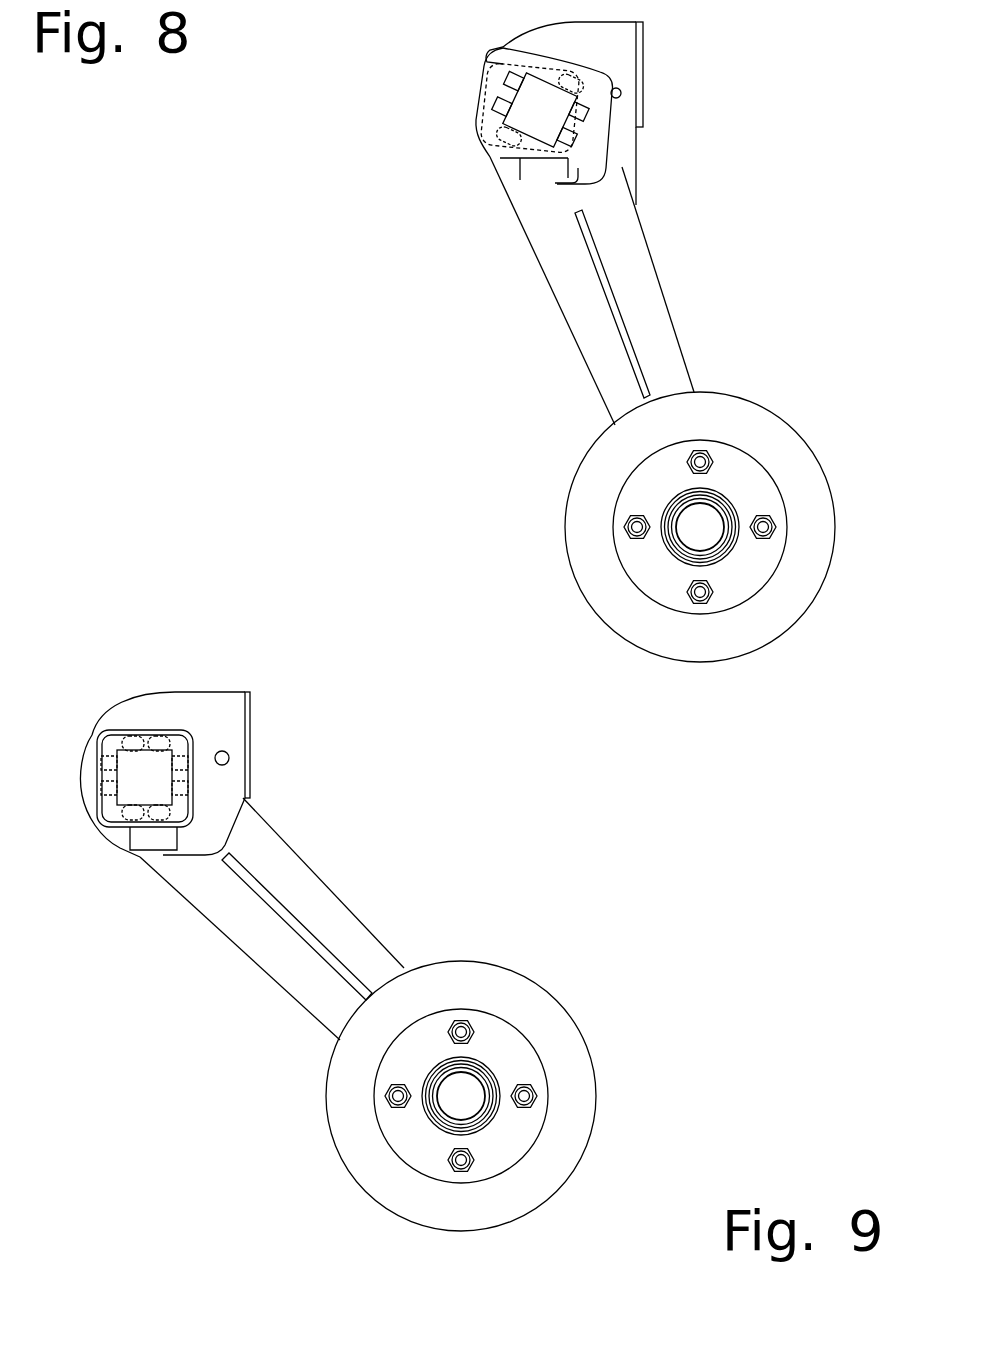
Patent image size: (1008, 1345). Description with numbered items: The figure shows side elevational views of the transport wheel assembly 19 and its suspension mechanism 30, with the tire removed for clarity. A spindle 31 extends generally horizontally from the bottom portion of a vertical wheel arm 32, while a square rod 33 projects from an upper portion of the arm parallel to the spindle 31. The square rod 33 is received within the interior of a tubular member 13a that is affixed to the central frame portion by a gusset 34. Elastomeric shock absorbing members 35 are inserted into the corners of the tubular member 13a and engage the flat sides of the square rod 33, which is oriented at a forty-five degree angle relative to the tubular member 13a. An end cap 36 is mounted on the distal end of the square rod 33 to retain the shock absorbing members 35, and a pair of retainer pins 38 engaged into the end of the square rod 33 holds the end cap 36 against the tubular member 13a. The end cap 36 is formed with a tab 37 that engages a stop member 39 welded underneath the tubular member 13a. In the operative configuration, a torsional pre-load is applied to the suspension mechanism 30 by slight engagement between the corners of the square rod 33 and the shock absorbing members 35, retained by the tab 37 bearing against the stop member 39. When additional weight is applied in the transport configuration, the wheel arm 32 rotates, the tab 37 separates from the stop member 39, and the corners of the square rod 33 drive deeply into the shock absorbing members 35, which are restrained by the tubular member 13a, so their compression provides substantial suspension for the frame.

In FIG. 8, the tubular member 13a is at (490, 80).
In FIG. 9, the tubular member 13a is at (195, 750).
In FIG. 8, the transport wheel assembly 19 is at (482, 389).
In FIG. 9, the transport wheel assembly 19 is at (228, 1071).
In FIG. 8, the suspension mechanism 30 is at (426, 142).
In FIG. 9, the suspension mechanism 30 is at (179, 605).
In FIG. 8, the spindle 31 is at (703, 530).
In FIG. 9, the spindle 31 is at (458, 1088).
In FIG. 8, the wheel arm 32 is at (637, 313).
In FIG. 9, the wheel arm 32 is at (327, 920).
In FIG. 8, the square rod 33 is at (543, 100).
In FIG. 9, the square rod 33 is at (138, 800).
In FIG. 8, the gusset 34 is at (641, 44).
In FIG. 9, the gusset 34 is at (247, 705).
In FIG. 8, the shock absorbing members 35 is at (558, 75).
In FIG. 9, the shock absorbing members 35 is at (110, 747).
In FIG. 8, the end cap 36 is at (598, 100).
In FIG. 8, the tab 37 is at (573, 170).
In FIG. 9, the retainer pins 38 is at (180, 795).
In FIG. 8, the stop member 39 is at (535, 168).